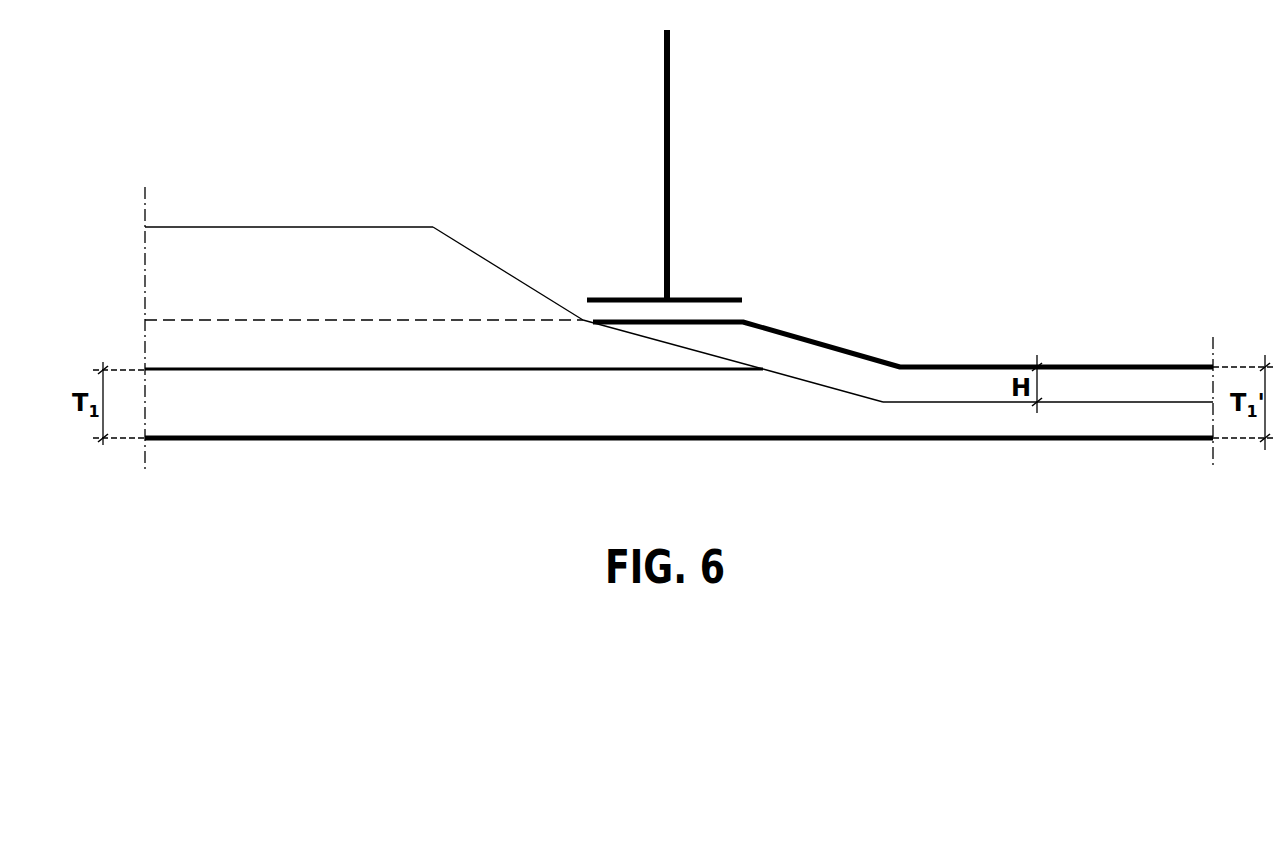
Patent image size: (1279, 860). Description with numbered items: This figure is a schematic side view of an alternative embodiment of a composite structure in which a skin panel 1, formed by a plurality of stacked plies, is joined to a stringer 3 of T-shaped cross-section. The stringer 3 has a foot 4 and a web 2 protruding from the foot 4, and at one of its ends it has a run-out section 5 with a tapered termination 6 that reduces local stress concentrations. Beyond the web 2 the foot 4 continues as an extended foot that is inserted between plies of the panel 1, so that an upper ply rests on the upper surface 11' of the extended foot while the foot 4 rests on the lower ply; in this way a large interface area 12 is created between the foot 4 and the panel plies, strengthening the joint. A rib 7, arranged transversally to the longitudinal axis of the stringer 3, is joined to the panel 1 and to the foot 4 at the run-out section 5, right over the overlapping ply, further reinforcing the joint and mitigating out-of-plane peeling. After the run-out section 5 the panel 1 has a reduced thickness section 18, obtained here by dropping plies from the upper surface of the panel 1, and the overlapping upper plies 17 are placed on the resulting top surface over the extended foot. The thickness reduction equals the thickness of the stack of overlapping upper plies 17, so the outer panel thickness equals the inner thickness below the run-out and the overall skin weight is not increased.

The skin panel 1 is at (757, 422).
The web 2 is at (335, 227).
The stringer 3 is at (265, 277).
The foot 4 is at (508, 351).
The run-out section 5 is at (522, 305).
The tapered termination 6 is at (487, 260).
The rib 7 is at (667, 107).
The upper surface of the extended foot 11' is at (454, 440).
The interface area 12 is at (715, 353).
The overlapping upper plies 17 is at (927, 382).
The reduced thickness section 18 is at (1102, 402).